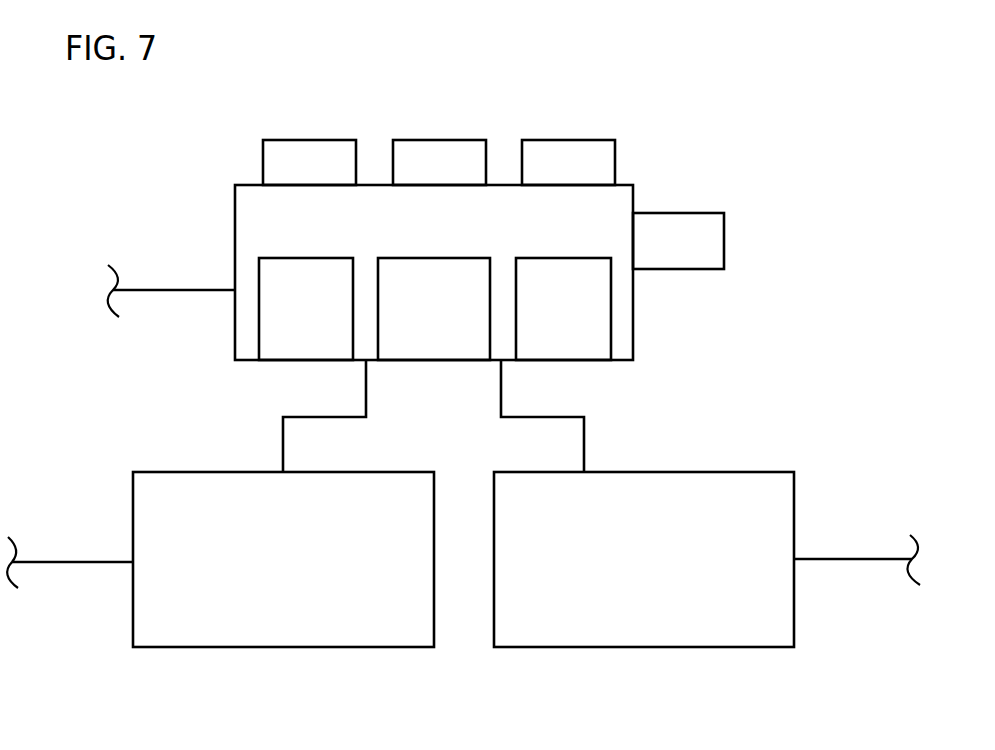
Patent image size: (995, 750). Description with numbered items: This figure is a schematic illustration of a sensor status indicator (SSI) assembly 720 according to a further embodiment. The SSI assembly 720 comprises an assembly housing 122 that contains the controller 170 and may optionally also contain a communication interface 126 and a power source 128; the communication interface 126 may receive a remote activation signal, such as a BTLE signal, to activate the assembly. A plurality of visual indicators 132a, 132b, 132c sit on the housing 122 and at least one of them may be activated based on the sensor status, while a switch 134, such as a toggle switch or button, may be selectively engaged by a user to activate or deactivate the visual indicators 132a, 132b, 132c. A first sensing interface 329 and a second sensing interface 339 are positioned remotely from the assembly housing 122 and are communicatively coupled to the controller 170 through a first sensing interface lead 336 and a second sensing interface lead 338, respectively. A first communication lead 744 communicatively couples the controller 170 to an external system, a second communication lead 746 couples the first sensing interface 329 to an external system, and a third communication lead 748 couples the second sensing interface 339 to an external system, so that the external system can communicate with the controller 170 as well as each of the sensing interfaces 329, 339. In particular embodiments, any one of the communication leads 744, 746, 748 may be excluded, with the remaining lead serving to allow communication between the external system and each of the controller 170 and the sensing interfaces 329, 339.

The SSI assembly 720 is at (479, 226).
The assembly housing 122 is at (235, 310).
The communication interface 126 is at (433, 273).
The power source 128 is at (572, 357).
The controller 170 is at (300, 356).
The visual indicator 132a is at (311, 149).
The visual indicator 132b is at (427, 150).
The visual indicator 132c is at (555, 150).
The switch 134 is at (717, 237).
The first communication lead 744 is at (165, 289).
The first sensing interface lead 336 is at (283, 442).
The second sensing interface lead 338 is at (584, 442).
The first sensing interface 329 is at (267, 629).
The second sensing interface 339 is at (627, 629).
The second communication lead 746 is at (62, 560).
The third communication lead 748 is at (870, 558).